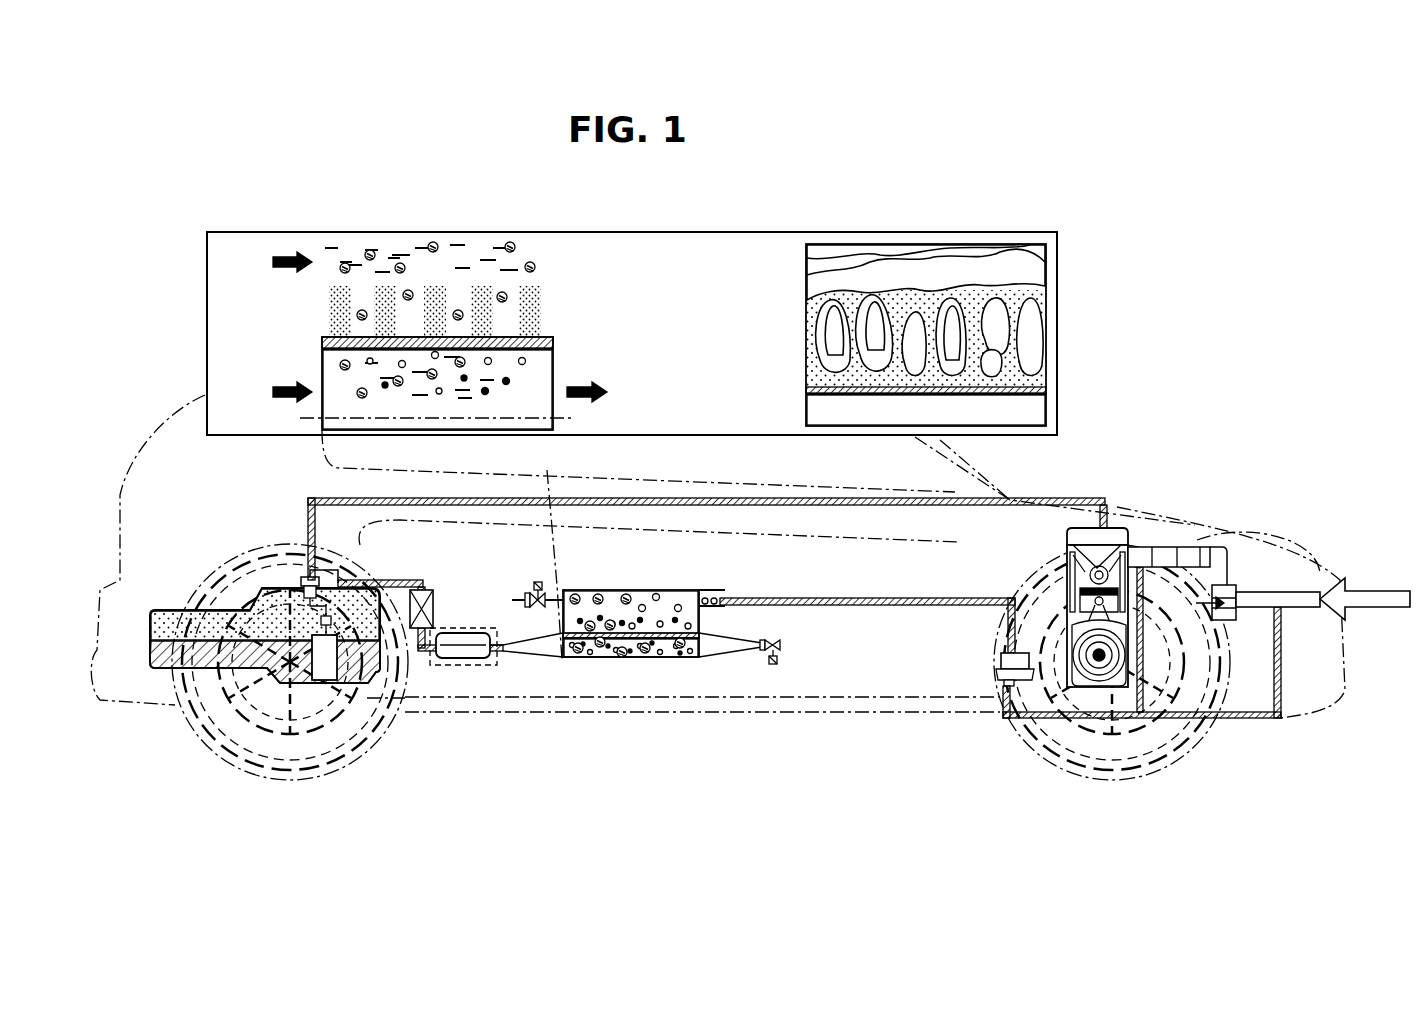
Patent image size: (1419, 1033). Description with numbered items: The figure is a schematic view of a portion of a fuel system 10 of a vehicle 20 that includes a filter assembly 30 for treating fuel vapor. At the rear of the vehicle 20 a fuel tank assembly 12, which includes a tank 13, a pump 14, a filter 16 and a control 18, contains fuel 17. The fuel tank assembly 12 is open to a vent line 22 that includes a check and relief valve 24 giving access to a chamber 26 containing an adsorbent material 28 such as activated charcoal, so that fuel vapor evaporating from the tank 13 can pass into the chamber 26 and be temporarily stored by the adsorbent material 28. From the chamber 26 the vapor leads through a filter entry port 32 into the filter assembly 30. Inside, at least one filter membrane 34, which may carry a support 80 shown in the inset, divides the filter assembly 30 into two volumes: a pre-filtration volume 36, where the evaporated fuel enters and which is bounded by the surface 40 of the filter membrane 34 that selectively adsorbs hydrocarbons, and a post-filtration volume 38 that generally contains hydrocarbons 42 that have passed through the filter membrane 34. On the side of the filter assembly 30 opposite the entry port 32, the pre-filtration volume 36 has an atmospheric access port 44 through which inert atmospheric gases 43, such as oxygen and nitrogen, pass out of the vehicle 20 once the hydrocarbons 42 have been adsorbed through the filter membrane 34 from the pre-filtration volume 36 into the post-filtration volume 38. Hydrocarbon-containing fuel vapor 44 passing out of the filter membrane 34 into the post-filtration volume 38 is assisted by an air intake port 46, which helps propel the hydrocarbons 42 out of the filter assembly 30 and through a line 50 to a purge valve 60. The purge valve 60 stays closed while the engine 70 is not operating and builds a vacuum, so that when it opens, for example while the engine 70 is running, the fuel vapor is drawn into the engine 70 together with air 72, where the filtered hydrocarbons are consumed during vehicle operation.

The fuel system 10 is at (1070, 480).
The fuel tank assembly 12 is at (195, 690).
The tank 13 is at (218, 683).
The pump 14 is at (326, 680).
The filter 16 is at (285, 578).
The fuel 17 is at (157, 670).
The control 18 is at (372, 580).
The vehicle 20 is at (1168, 505).
The vent line 22 is at (410, 578).
The check and relief valve 24 is at (433, 610).
The chamber 26 is at (472, 660).
The adsorbent material 28 is at (440, 660).
The filter assembly 30 is at (613, 665).
The filter entry port 32 is at (505, 652).
The filter membrane 34 is at (699, 636).
The pre-filtration volume 36 is at (688, 658).
The post-filtration volume 38 is at (682, 595).
The surface 40 is at (658, 640).
The hydrocarbons 42 is at (628, 592).
The inert atmospheric gases 43 is at (385, 388).
The atmospheric access port 44 is at (285, 398).
The air intake port 46 is at (535, 590).
The line 50 is at (812, 597).
The purge valve 60 is at (998, 662).
The engine 70 is at (1060, 688).
The air 72 is at (1372, 585).
The support 80 is at (382, 300).